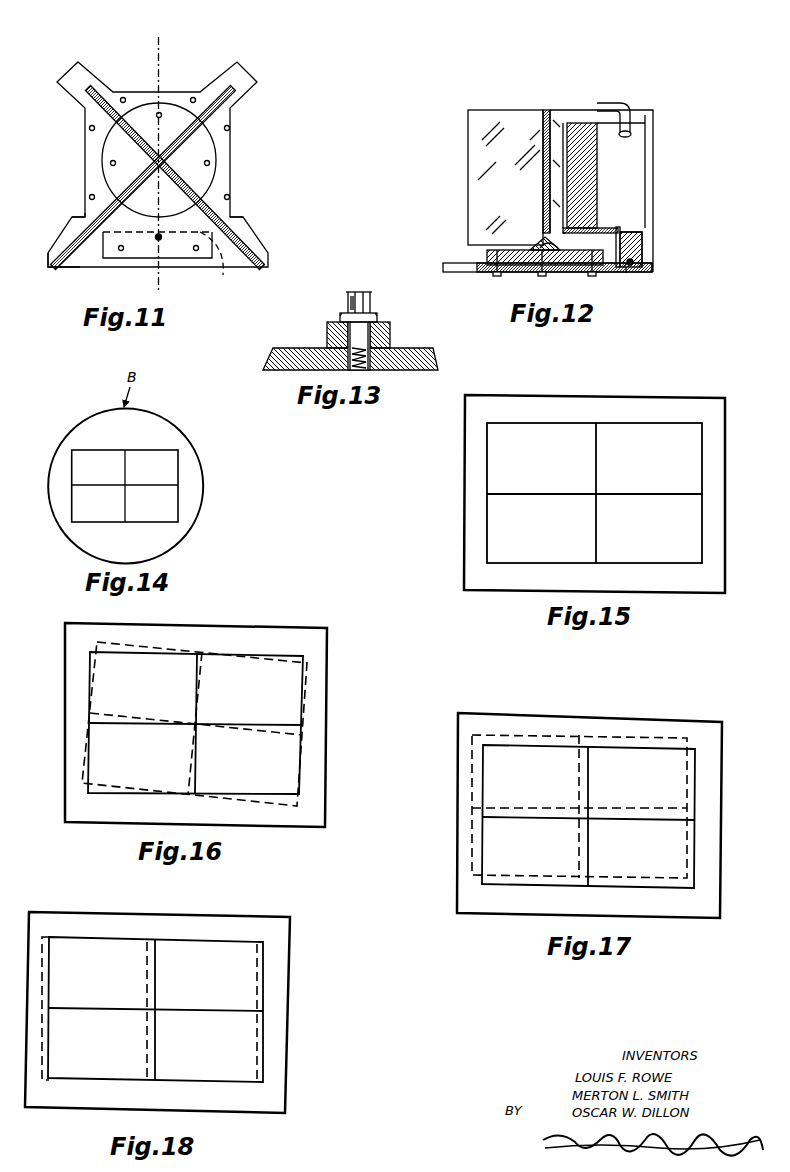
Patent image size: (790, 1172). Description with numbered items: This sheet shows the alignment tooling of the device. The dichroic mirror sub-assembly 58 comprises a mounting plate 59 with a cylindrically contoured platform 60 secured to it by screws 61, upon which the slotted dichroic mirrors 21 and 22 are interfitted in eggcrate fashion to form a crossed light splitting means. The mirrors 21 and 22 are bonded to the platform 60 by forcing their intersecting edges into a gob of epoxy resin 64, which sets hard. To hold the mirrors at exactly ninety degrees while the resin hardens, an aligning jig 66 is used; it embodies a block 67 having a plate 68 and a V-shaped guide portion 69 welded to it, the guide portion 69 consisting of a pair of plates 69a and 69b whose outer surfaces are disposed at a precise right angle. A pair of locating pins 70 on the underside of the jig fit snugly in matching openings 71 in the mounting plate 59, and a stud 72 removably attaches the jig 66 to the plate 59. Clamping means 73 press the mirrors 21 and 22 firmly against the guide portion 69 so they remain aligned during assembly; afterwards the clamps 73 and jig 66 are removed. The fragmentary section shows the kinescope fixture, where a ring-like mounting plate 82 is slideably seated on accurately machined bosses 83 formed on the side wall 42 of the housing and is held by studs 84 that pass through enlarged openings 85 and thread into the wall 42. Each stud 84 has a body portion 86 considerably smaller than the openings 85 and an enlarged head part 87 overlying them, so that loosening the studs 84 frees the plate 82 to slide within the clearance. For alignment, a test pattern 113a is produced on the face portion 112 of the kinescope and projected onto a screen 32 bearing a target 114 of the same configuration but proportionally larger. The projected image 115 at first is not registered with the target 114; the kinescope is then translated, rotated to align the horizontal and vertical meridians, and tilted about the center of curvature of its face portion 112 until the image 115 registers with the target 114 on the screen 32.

In FIG. 11, the dichroic mirror 21 is at (236, 97).
In FIG. 12, the dichroic mirror 21 is at (473, 132).
In FIG. 11, the dichroic mirror 22 is at (88, 96).
In FIG. 12, the dichroic mirror 22 is at (654, 113).
In FIG. 13, the side wall 42 is at (434, 352).
In FIG. 11, the dichroic mirror sub-assembly 58 is at (164, 168).
In FIG. 12, the dichroic mirror sub-assembly 58 is at (585, 191).
In FIG. 11, the mounting plate 59 is at (229, 183).
In FIG. 12, the mounting plate 59 is at (483, 273).
In FIG. 11, the cylindrically contoured platform 60 is at (207, 142).
In FIG. 12, the cylindrically contoured platform 60 is at (487, 253).
In FIG. 11, the screws 61 is at (161, 112).
In FIG. 12, the epoxy resin 64 is at (537, 238).
In FIG. 11, the aligning jig 66 is at (181, 260).
In FIG. 12, the aligning jig 66 is at (650, 254).
In FIG. 11, the block 67 is at (230, 272).
In FIG. 12, the block 67 is at (645, 240).
In FIG. 11, the plate 68 is at (77, 267).
In FIG. 12, the plate 68 is at (645, 227).
In FIG. 11, the V-shaped guide portion 69 is at (112, 223).
In FIG. 12, the V-shaped guide portion 69 is at (623, 177).
In FIG. 11, the plate 69a is at (203, 210).
In FIG. 12, the plate 69a is at (633, 147).
In FIG. 11, the plate 69b is at (106, 220).
In FIG. 11, the locating pins 70 is at (121, 251).
In FIG. 12, the locating pins 70 is at (645, 261).
In FIG. 12, the openings 71 is at (632, 273).
In FIG. 11, the stud 72 is at (162, 238).
In FIG. 12, the stud 72 is at (617, 227).
In FIG. 12, the clamping means 73 is at (631, 104).
In FIG. 13, the ring-like mounting plate 82 is at (327, 328).
In FIG. 13, the bosses 83 is at (391, 348).
In FIG. 13, the studs 84 is at (373, 293).
In FIG. 13, the enlarged openings 85 is at (378, 324).
In FIG. 13, the body portion 86 is at (371, 367).
In FIG. 13, the enlarged head part 87 is at (351, 292).
In FIG. 14, the face portion 112 is at (158, 428).
In FIG. 14, the test pattern 113a is at (178, 465).
In FIG. 15, the screen 32 is at (710, 458).
In FIG. 16, the screen 32 is at (317, 640).
In FIG. 17, the screen 32 is at (708, 728).
In FIG. 18, the screen 32 is at (273, 952).
In FIG. 15, the target 114 is at (702, 533).
In FIG. 16, the target 114 is at (303, 787).
In FIG. 17, the target 114 is at (697, 787).
In FIG. 18, the target 114 is at (227, 940).
In FIG. 16, the image 115 is at (120, 643).
In FIG. 17, the image 115 is at (528, 733).
In FIG. 18, the image 115 is at (42, 940).